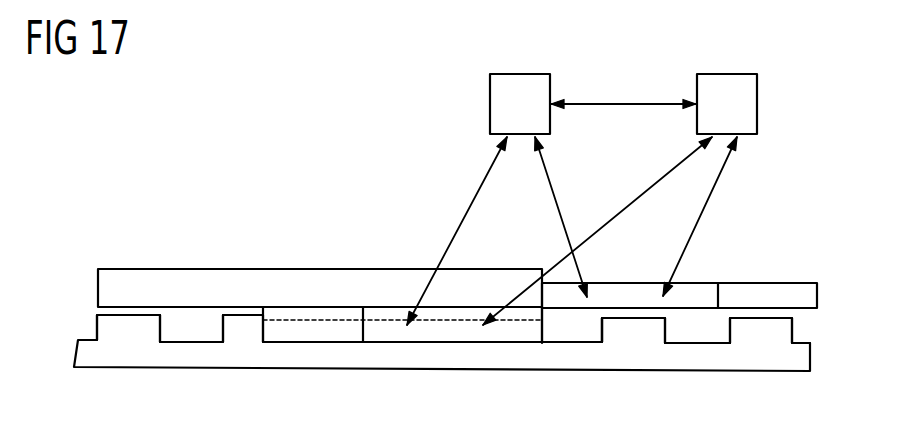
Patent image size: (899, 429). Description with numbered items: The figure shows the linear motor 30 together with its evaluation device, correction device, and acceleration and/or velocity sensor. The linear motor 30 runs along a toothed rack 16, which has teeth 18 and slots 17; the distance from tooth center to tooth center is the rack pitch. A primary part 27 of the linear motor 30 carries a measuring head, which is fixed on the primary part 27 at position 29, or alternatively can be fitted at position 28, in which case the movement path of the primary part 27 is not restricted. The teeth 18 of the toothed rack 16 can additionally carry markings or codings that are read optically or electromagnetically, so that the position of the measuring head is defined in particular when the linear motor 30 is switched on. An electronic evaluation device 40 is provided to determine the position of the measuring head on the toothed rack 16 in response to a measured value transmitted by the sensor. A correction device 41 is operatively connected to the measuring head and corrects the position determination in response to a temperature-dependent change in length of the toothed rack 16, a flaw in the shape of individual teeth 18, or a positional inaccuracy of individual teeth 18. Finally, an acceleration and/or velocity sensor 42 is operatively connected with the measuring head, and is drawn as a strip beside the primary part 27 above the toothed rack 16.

The toothed rack 16 is at (812, 363).
The slots 17 is at (698, 330).
The teeth 18 is at (787, 327).
The primary part 27 is at (311, 280).
The position 28 is at (450, 335).
The position 29 is at (630, 297).
The linear motor 30 is at (76, 285).
The electronic evaluation device 40 is at (551, 199).
The correction device 41 is at (620, 199).
The acceleration and/or velocity sensor 42 is at (780, 292).